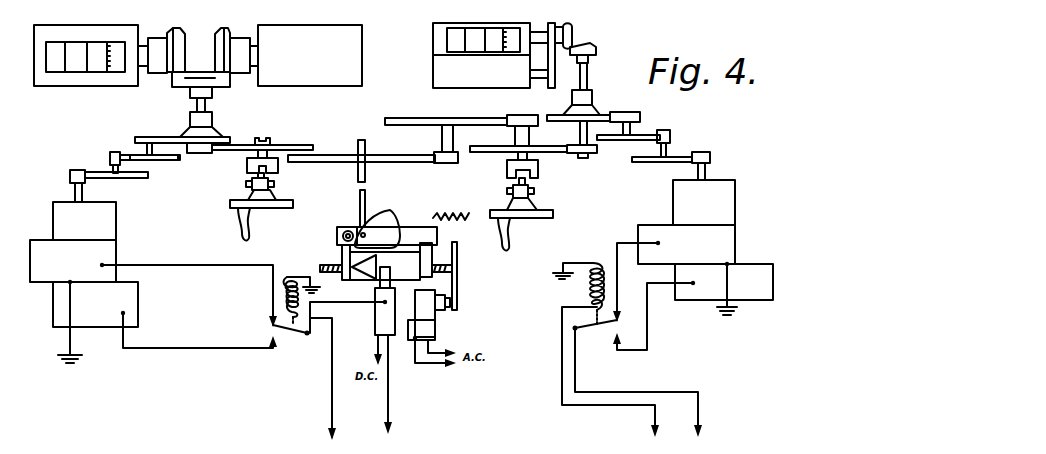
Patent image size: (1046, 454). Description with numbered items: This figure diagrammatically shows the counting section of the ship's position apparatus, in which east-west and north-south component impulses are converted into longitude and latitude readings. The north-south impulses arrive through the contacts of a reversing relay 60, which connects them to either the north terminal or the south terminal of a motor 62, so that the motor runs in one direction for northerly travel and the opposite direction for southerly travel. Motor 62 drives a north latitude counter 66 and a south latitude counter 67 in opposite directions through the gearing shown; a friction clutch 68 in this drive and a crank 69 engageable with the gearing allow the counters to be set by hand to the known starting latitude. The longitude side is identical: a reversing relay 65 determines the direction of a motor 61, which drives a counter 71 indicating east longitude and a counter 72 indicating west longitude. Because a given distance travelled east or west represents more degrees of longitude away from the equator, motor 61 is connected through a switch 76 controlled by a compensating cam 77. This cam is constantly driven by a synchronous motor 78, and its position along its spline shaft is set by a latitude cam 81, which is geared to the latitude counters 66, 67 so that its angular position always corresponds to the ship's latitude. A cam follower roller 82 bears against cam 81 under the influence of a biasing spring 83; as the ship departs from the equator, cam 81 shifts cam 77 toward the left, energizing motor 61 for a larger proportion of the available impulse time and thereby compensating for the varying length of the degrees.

The reversing relay 60 is at (598, 348).
The motor 61 is at (108, 248).
The motor 62 is at (728, 250).
The reversing relay 65 is at (290, 352).
The north latitude counter 66 is at (437, 42).
The south latitude counter 67 is at (445, 70).
The friction clutch 68 is at (597, 110).
The crank 69 is at (527, 210).
The counter 71 is at (303, 78).
The counter 72 is at (82, 82).
The switch 76 is at (378, 318).
The compensating cam 77 is at (398, 257).
The synchronous motor 78 is at (425, 328).
The latitude cam 81 is at (390, 220).
The cam follower roller 82 is at (345, 225).
The biasing spring 83 is at (468, 217).